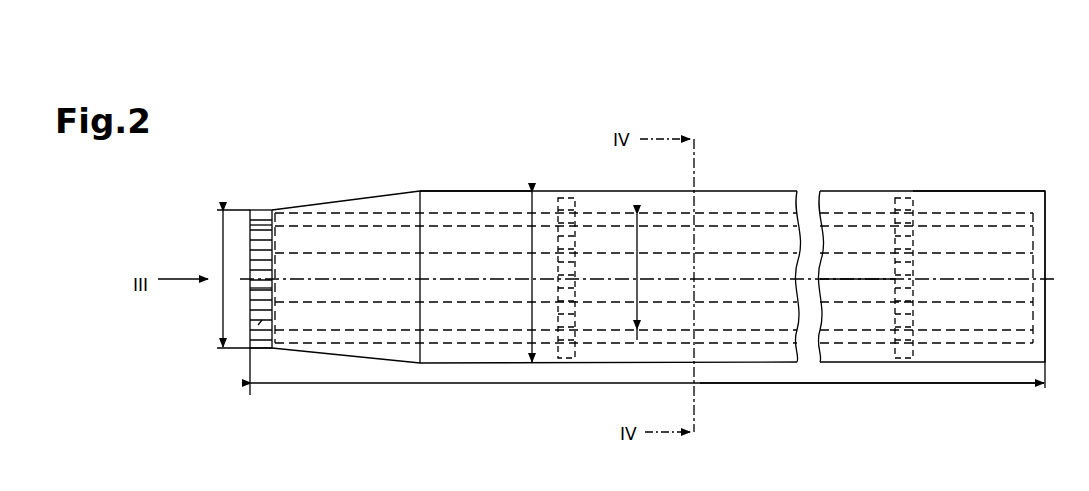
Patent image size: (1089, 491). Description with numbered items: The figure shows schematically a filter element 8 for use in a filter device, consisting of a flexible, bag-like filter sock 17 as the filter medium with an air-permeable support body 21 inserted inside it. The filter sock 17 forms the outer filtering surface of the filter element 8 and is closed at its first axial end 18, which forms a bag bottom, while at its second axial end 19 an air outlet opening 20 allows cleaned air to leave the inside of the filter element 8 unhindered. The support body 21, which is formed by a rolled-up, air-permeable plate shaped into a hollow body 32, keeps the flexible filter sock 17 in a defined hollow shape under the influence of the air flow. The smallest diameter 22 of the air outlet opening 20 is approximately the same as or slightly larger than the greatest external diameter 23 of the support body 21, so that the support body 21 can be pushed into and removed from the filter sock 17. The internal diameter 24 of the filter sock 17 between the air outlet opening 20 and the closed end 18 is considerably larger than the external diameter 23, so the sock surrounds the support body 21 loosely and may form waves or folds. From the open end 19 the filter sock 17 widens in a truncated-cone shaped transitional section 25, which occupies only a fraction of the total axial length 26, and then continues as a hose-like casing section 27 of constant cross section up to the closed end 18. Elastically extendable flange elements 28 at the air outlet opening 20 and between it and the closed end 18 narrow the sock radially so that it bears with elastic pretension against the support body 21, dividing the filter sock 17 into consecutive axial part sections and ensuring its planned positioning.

The filter element 8 is at (726, 178).
The filter sock 17 is at (921, 198).
The first axial end 18 is at (1036, 178).
The second axial end 19 is at (252, 206).
The air outlet opening 20 is at (247, 244).
The support body 21 is at (443, 212).
The diameter 22 is at (222, 312).
The greatest external diameter 23 is at (633, 313).
The internal diameter 24 is at (530, 312).
The transitional section 25 is at (318, 355).
The total axial length 26 is at (770, 383).
The casing section 27 is at (866, 262).
The flange element 28 is at (261, 212).
The hollow body 32 is at (288, 287).